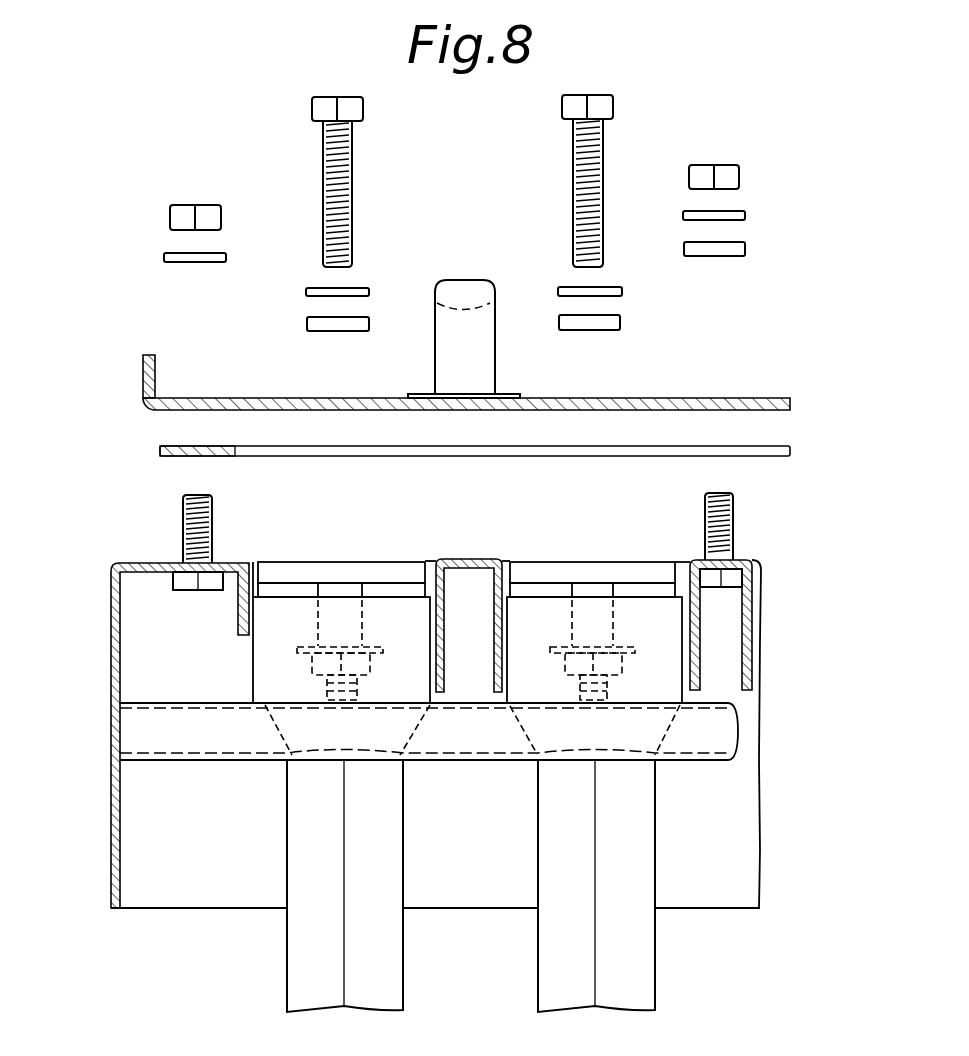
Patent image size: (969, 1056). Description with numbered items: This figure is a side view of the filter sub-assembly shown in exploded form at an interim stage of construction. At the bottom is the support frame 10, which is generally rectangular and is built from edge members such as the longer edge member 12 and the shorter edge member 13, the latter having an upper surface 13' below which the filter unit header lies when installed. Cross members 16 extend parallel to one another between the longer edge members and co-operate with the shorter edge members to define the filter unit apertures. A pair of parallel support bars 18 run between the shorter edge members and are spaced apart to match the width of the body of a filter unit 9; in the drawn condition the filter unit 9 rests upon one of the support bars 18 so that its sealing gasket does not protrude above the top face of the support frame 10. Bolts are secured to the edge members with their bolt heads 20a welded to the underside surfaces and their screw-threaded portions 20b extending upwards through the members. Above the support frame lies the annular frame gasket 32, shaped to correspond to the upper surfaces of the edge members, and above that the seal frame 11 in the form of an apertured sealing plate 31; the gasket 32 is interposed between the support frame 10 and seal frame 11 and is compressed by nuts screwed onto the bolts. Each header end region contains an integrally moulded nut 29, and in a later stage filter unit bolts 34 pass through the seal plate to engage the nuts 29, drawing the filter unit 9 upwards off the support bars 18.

The filter unit 9 is at (270, 963).
The support frame 10 is at (104, 629).
The seal frame 11 is at (136, 382).
The edge member 12 is at (157, 880).
The edge member 13 is at (396, 734).
The upper surface of edge member 13' is at (173, 539).
The cross member 16 is at (764, 593).
The support bar 18 is at (698, 740).
The bolt head 20a is at (190, 590).
The screw-threaded portion 20b is at (215, 520).
The nut 29 is at (565, 665).
The sealing plate 31 is at (792, 402).
The frame gasket 32 is at (160, 452).
The filter unit bolt 34 is at (355, 177).